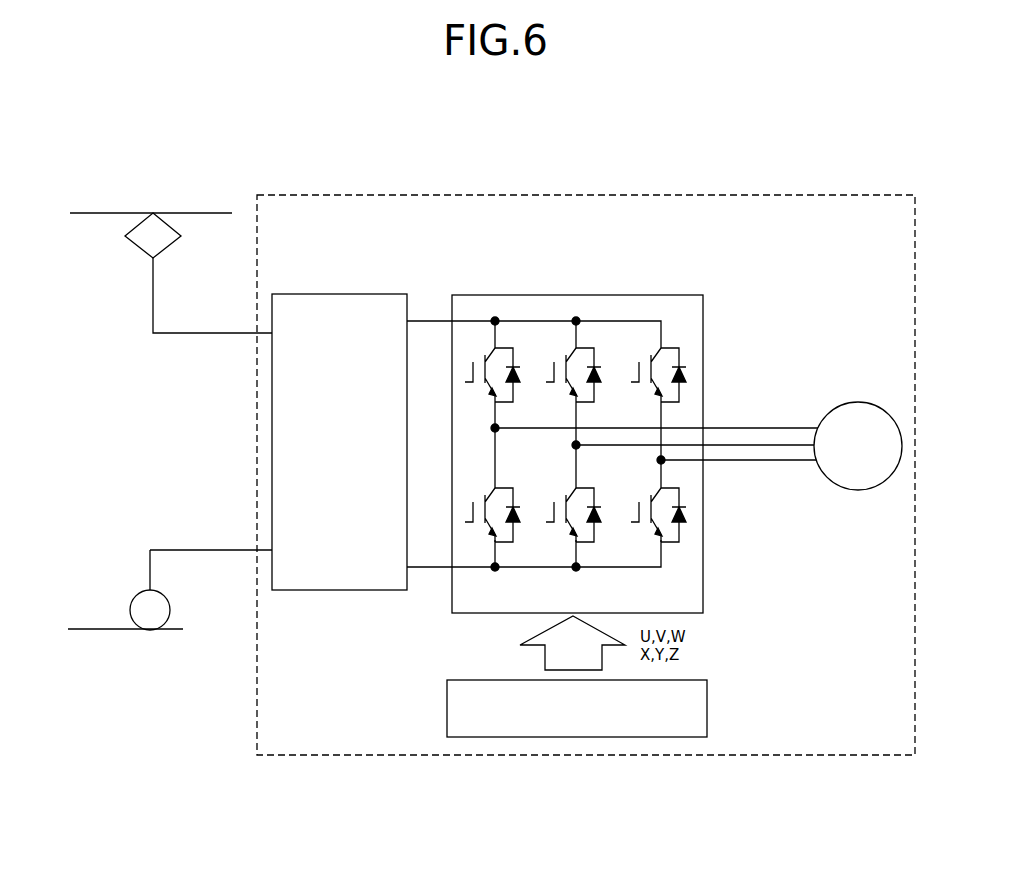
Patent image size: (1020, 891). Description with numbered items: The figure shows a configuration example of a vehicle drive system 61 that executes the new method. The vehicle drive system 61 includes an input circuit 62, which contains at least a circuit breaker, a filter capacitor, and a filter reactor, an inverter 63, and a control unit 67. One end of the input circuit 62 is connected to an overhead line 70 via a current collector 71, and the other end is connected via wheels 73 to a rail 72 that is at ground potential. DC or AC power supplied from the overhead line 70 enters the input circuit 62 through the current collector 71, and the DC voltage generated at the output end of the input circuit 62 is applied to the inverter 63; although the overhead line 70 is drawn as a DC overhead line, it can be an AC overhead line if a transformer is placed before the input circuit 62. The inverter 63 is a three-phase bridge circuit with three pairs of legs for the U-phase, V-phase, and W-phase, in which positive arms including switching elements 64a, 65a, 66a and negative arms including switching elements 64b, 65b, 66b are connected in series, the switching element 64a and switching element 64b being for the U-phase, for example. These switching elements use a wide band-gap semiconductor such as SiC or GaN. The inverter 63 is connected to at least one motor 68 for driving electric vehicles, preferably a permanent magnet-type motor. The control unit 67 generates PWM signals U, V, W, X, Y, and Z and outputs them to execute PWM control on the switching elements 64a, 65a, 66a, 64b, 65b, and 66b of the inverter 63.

The vehicle drive system 61 is at (771, 193).
The input circuit 62 is at (343, 294).
The inverter 63 is at (483, 294).
The switching element 64a is at (515, 357).
The switching element 64b is at (513, 492).
The switching element 65a is at (596, 357).
The switching element 65b is at (594, 492).
The switching element 66a is at (682, 357).
The switching element 66b is at (683, 497).
The control unit 67 is at (707, 708).
The motor 68 is at (855, 492).
The overhead line 70 is at (92, 213).
The current collector 71 is at (136, 247).
The rail 72 is at (126, 631).
The wheels 73 is at (131, 594).